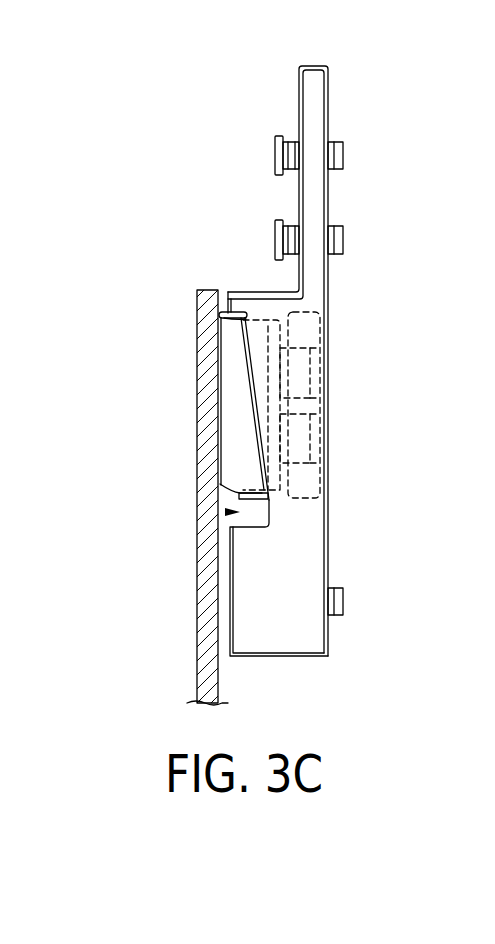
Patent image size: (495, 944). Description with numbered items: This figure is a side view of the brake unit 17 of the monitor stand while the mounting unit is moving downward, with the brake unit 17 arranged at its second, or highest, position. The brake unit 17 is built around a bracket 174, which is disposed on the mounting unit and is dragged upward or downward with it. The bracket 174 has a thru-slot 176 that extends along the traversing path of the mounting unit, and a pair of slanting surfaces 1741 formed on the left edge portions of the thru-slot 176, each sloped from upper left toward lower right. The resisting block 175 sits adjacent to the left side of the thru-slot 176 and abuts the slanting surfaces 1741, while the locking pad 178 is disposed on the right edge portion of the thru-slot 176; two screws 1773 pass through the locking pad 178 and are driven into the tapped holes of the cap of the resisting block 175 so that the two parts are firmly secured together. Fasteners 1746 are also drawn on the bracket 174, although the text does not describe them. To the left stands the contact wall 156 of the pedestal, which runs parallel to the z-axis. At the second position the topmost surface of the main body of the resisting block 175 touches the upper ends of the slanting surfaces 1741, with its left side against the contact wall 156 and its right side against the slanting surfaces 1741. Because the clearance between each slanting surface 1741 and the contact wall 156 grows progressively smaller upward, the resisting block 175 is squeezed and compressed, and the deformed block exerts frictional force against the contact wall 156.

The brake unit 17 is at (131, 201).
The fastener 1746 is at (276, 150).
The slanting surface 1741 is at (252, 376).
The resisting block 175 is at (232, 398).
The contact wall 156 is at (208, 453).
The thru-slot 176 is at (226, 512).
The bracket 174 is at (267, 587).
The locking pad 178 is at (311, 332).
The screw 1773 is at (314, 372).